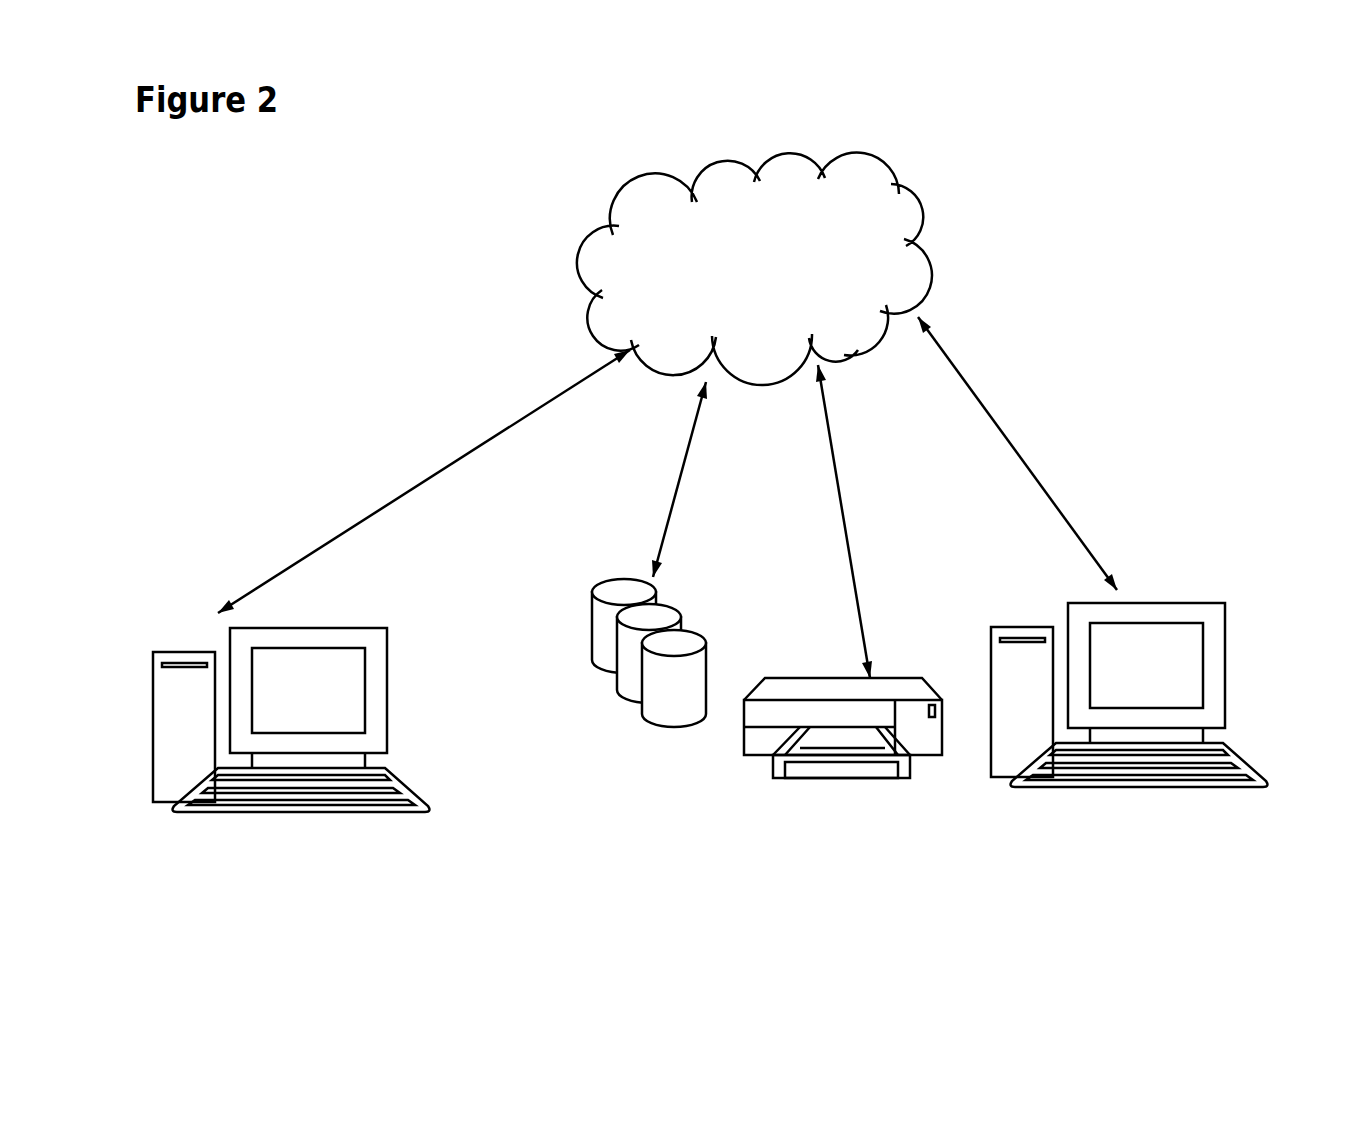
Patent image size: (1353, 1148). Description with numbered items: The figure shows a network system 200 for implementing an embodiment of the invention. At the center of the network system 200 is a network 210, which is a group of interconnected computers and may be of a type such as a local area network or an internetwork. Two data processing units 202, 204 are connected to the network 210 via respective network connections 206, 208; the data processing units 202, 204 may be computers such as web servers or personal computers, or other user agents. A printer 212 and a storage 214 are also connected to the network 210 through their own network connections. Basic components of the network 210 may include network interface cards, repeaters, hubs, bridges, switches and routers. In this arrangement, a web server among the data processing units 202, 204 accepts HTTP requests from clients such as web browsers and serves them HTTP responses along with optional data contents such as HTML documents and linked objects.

The network system 200 is at (1030, 140).
The data processing unit 202 is at (291, 772).
The data processing unit 204 is at (1129, 741).
The network connection 206 is at (424, 481).
The network connection 208 is at (1055, 453).
The network 210 is at (840, 283).
The printer 212 is at (843, 599).
The storage 214 is at (628, 585).